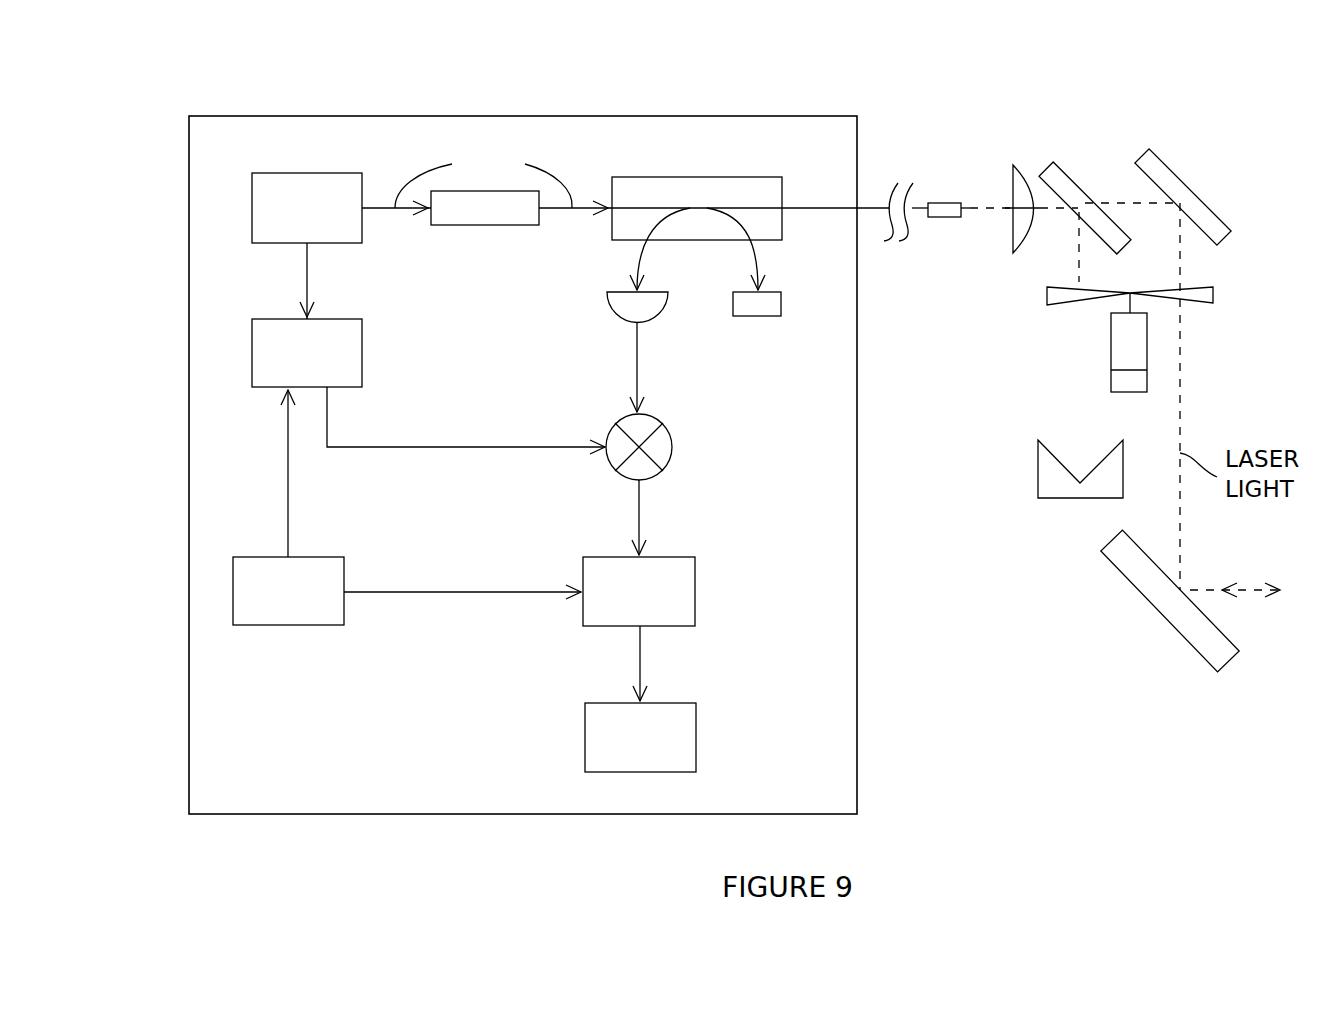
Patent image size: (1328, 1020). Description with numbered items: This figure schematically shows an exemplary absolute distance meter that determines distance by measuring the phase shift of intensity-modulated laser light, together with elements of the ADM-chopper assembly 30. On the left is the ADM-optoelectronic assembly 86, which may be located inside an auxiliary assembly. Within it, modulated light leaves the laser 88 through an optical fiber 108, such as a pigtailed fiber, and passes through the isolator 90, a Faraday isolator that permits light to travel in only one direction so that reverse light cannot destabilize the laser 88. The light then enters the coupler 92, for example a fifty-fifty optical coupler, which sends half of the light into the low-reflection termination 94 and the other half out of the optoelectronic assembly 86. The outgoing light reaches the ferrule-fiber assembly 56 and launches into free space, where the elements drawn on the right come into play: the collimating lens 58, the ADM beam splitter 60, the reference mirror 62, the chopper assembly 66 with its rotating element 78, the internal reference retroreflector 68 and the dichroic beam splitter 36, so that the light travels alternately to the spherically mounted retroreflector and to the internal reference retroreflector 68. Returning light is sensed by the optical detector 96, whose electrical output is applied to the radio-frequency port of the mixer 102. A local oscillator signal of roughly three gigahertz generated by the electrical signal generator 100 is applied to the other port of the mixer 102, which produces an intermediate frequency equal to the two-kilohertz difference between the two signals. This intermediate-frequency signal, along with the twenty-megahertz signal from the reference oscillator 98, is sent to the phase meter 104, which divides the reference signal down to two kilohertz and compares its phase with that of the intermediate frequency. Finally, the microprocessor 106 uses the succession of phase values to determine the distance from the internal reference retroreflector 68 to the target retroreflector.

The ADM-chopper assembly 30 is at (1055, 80).
The dichroic beam splitter 36 is at (1140, 595).
The ferrule-fiber assembly 56 is at (945, 180).
The collimating lens 58 is at (1013, 165).
The ADM beam splitter 60 is at (1063, 163).
The reference mirror 62 is at (1183, 177).
The chopper assembly 66 is at (1023, 340).
The internal reference retroreflector 68 is at (1038, 468).
The chopper / galvanometer element 78 is at (1213, 293).
The ADM-optoelectronic assembly 86 is at (532, 116).
The laser 88 is at (341, 246).
The isolator 90 is at (460, 225).
The coupler 92 is at (668, 177).
The low-reflection termination 94 is at (782, 305).
The optical detector 96 is at (661, 313).
The reference oscillator 98 is at (407, 507).
The electrical signal generator 100 is at (428, 386).
The mixer 102 is at (670, 447).
The phase meter 104 is at (639, 629).
The microprocessor 106 is at (640, 737).
The optical fiber 108 is at (483, 181).